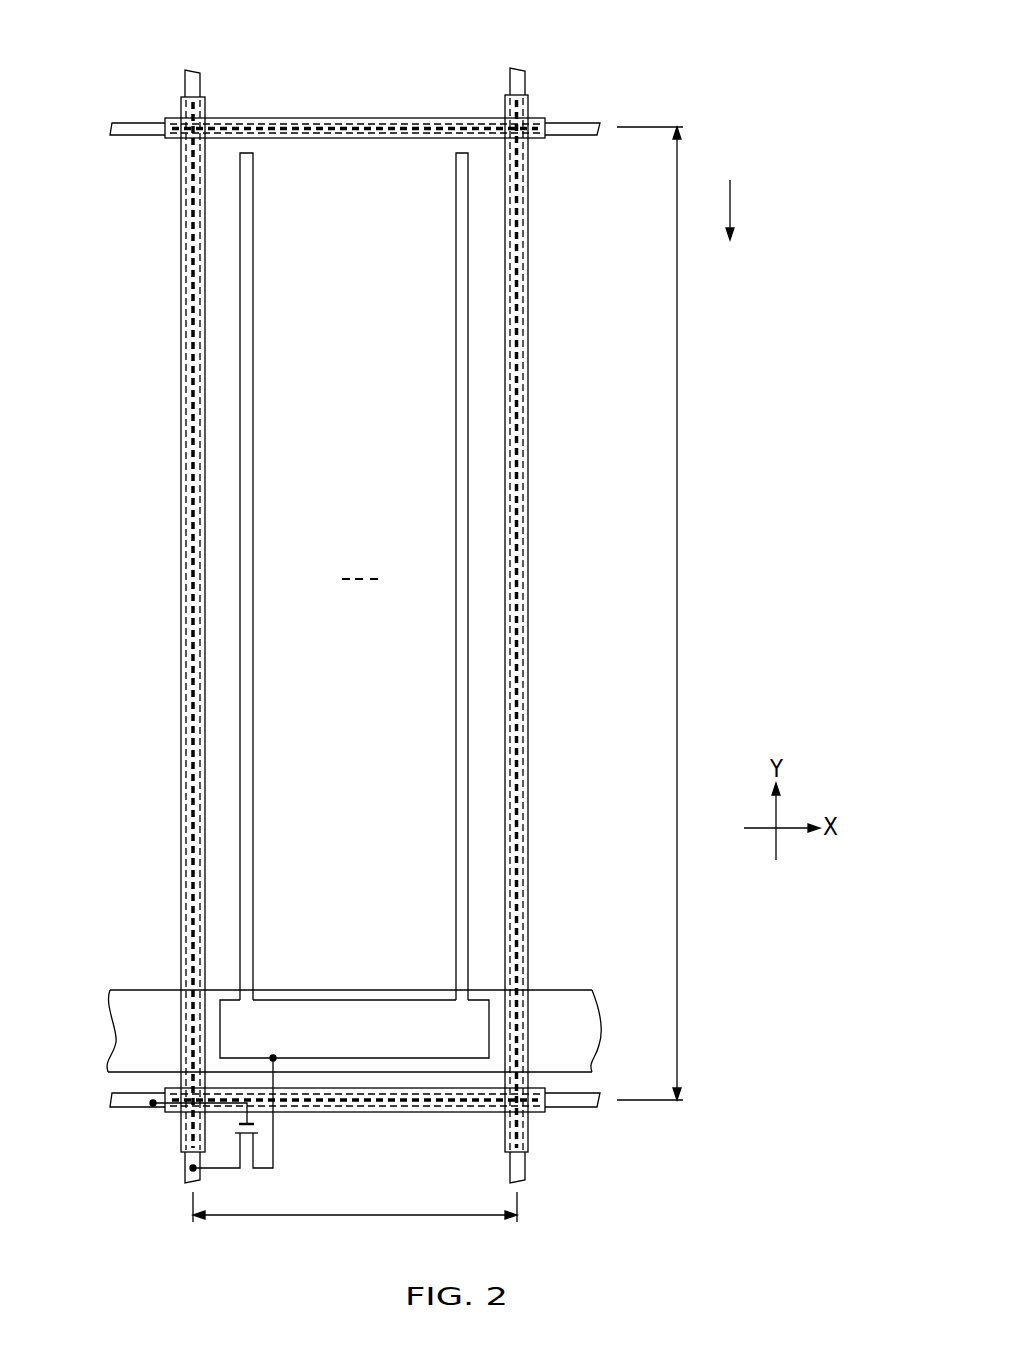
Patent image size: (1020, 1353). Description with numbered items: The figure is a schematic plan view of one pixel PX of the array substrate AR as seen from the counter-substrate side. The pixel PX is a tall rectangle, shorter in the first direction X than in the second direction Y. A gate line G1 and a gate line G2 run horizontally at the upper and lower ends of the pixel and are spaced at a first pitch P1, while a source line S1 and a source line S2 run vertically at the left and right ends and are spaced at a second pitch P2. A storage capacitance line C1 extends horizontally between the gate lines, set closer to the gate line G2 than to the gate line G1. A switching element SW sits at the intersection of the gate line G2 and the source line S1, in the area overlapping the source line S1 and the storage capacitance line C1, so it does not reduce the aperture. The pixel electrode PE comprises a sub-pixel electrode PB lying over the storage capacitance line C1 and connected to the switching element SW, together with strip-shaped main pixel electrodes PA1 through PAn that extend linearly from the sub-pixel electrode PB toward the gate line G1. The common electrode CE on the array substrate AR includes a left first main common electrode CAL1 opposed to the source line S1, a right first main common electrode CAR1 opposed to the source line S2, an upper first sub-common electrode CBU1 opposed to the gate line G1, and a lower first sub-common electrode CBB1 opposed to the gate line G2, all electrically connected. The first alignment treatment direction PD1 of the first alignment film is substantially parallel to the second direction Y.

The source line S1 is at (193, 68).
The source line S2 is at (517, 66).
The gate line G1 is at (110, 129).
The gate line G2 is at (110, 1100).
The first sub-common electrode CBU1 is at (360, 118).
The first sub-common electrode CBB1 is at (378, 1112).
The first main common electrode CAL1 is at (182, 832).
The first main common electrode CAR1 is at (528, 842).
The common electrode CE is at (532, 723).
The storage capacitance line C1 is at (112, 1040).
The pixel electrode PE is at (354, 653).
The main pixel electrode PA1 is at (253, 842).
The main pixel electrode PAn is at (456, 815).
The sub-pixel electrode PB is at (410, 1000).
The switching element SW is at (283, 1132).
The pixel PX is at (518, 119).
The array substrate AR is at (619, 95).
The first alignment treatment direction PD1 is at (777, 210).
The first pitch P1 is at (664, 613).
The second pitch P2 is at (355, 1219).